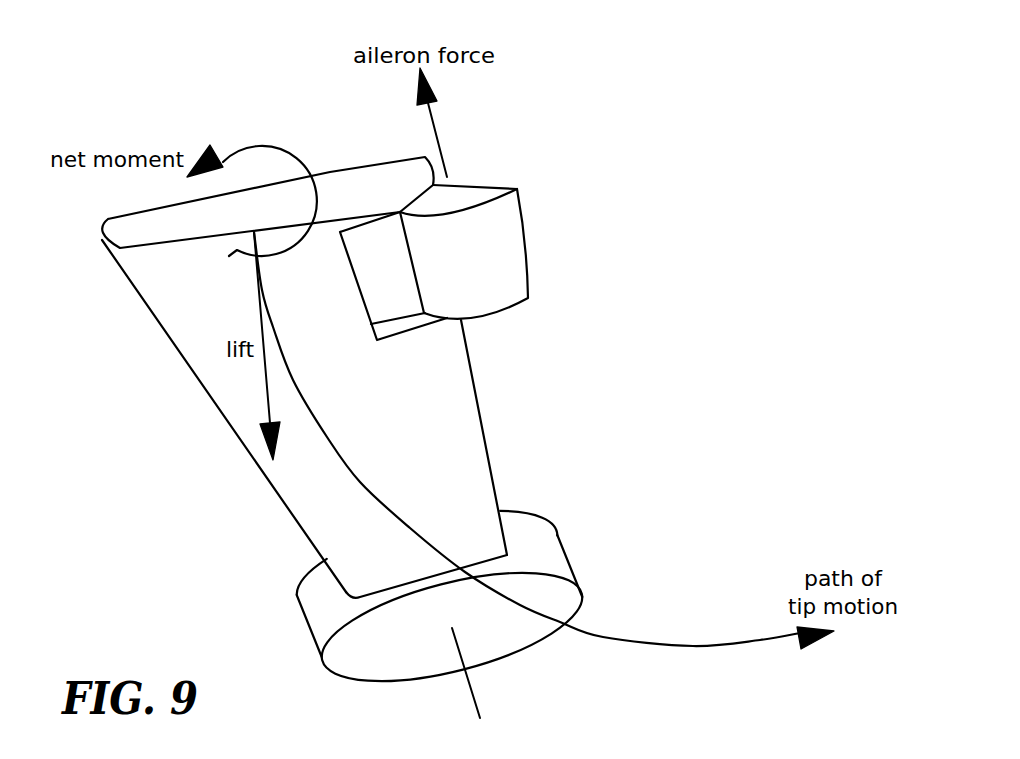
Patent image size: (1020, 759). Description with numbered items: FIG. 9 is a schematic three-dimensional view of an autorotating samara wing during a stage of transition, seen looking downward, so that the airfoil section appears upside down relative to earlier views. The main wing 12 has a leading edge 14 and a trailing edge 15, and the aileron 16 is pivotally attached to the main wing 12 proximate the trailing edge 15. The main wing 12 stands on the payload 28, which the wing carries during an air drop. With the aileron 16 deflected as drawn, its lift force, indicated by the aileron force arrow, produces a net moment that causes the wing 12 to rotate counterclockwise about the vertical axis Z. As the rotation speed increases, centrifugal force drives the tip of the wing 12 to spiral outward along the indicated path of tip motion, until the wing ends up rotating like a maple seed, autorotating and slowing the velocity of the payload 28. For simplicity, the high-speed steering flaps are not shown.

The main wing 12 is at (326, 377).
The leading edge 14 is at (160, 327).
The trailing edge 15 is at (478, 397).
The aileron 16 is at (505, 255).
The payload 28 is at (383, 648).
The axis of rotation Z is at (480, 710).